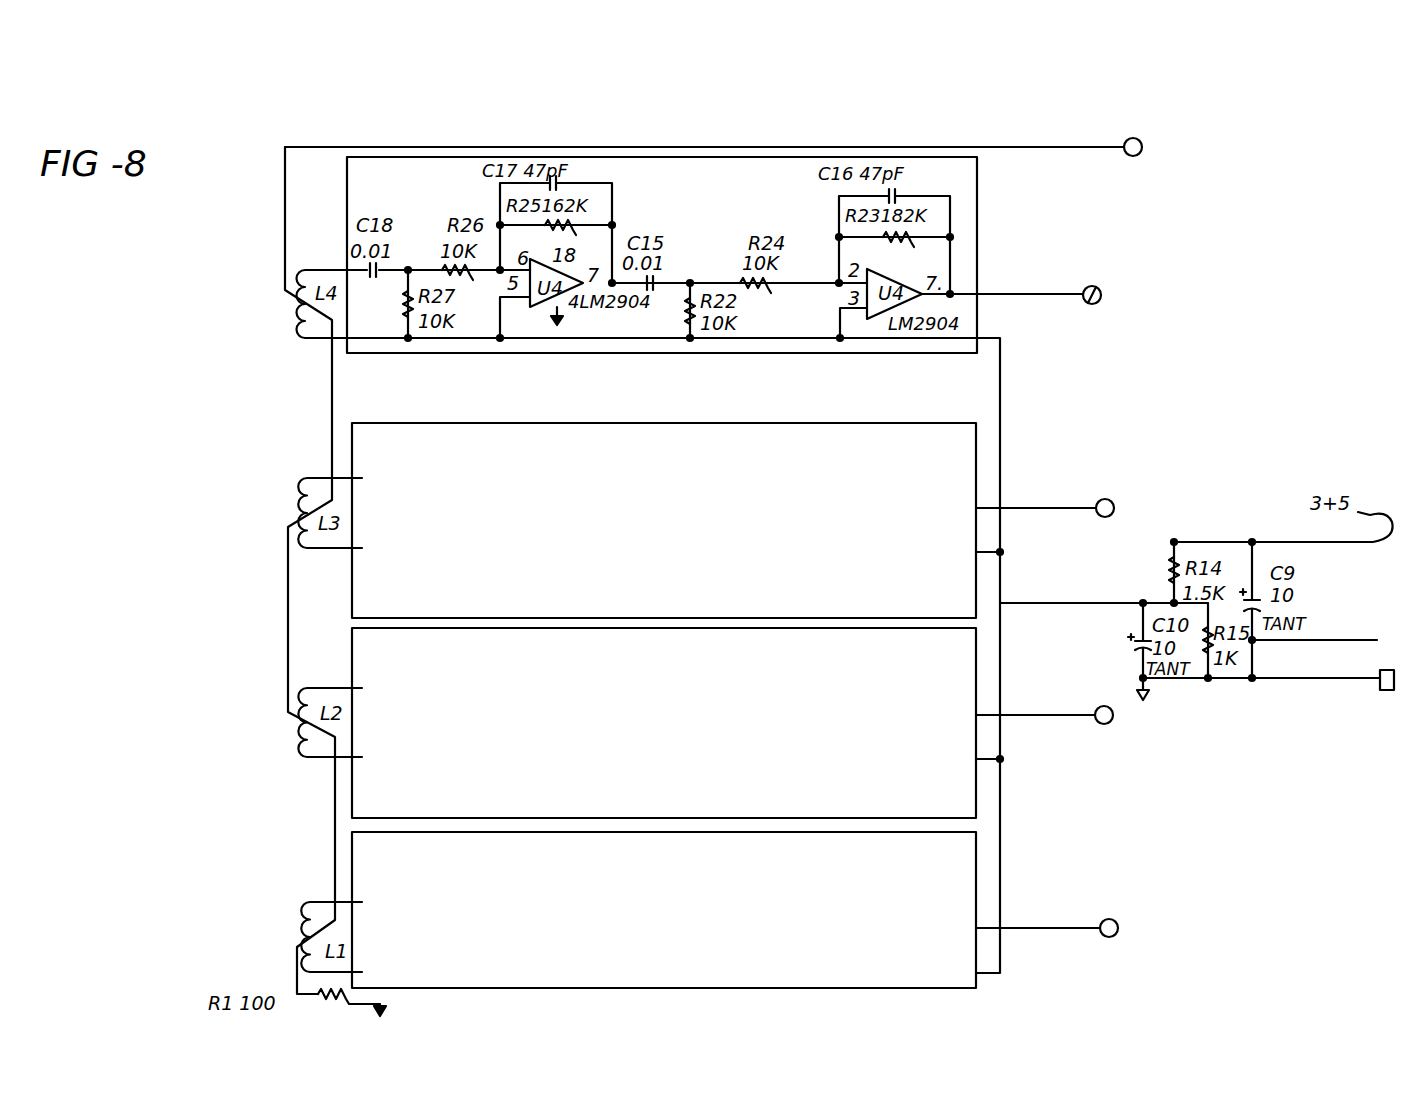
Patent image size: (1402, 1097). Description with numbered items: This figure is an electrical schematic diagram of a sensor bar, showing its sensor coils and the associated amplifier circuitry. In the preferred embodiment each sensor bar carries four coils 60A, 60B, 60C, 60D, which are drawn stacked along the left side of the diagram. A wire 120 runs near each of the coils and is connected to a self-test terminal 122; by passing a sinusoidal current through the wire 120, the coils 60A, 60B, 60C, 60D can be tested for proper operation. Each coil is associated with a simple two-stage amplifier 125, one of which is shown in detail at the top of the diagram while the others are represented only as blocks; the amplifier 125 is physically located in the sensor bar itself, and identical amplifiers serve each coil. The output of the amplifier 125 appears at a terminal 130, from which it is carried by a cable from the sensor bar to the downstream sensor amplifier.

The wire 120 is at (318, 147).
The self-test terminal 122 is at (1142, 147).
The two-stage amplifier 125 is at (714, 198).
The terminal 130 is at (1101, 292).
The coil 60A is at (305, 326).
The coil 60B is at (305, 512).
The coil 60C is at (305, 749).
The coil 60D is at (310, 918).